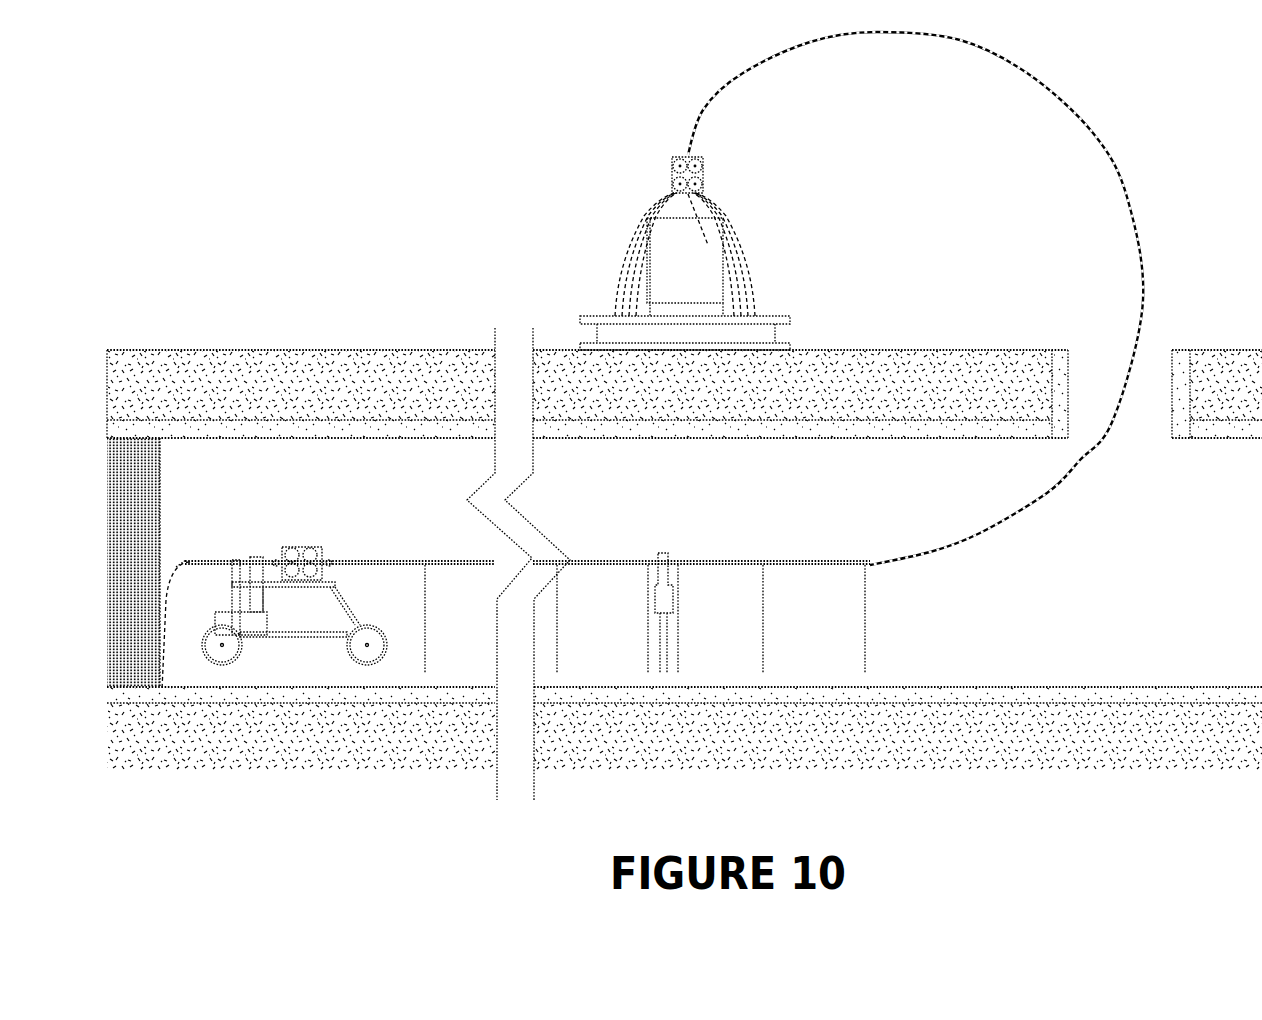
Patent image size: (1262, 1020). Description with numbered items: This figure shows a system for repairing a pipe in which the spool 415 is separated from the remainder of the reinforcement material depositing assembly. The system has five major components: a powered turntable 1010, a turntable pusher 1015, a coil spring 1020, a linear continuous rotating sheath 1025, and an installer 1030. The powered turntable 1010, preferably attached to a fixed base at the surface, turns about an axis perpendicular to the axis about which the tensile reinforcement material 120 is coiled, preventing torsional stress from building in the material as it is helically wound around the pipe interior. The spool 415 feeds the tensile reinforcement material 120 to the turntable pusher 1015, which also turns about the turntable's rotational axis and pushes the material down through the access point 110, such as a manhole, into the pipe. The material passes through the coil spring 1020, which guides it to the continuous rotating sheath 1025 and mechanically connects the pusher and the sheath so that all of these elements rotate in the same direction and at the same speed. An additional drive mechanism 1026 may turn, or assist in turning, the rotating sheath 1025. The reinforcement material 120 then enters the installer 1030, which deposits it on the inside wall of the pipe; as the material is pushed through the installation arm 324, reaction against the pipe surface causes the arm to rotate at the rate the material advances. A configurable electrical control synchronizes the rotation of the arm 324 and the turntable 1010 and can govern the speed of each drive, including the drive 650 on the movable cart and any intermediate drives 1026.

The access point 110 is at (1068, 380).
The tensile reinforcement material 120 is at (707, 235).
The installation arm 324 is at (187, 565).
The spool 415 is at (641, 285).
The drive 650 is at (257, 627).
The powered turntable 1010 is at (778, 318).
The turntable pusher 1015 is at (703, 172).
The coil spring 1020 is at (1125, 187).
The continuous rotating sheath 1025 is at (613, 562).
The additional drive mechanism 1026 is at (670, 602).
The installer 1030 is at (306, 535).